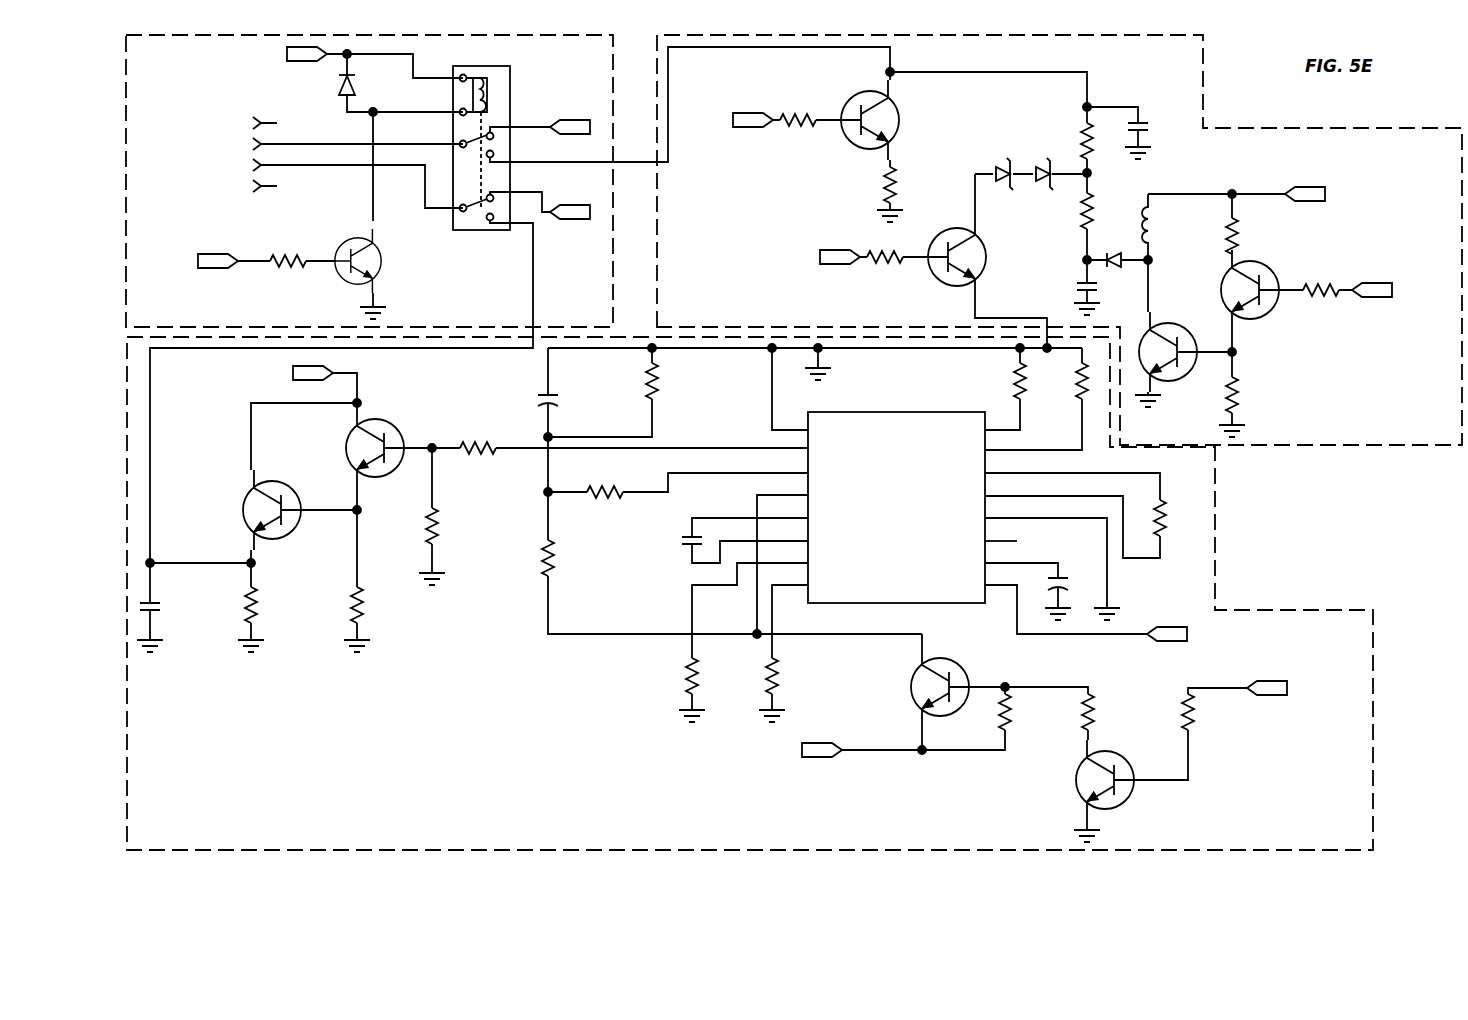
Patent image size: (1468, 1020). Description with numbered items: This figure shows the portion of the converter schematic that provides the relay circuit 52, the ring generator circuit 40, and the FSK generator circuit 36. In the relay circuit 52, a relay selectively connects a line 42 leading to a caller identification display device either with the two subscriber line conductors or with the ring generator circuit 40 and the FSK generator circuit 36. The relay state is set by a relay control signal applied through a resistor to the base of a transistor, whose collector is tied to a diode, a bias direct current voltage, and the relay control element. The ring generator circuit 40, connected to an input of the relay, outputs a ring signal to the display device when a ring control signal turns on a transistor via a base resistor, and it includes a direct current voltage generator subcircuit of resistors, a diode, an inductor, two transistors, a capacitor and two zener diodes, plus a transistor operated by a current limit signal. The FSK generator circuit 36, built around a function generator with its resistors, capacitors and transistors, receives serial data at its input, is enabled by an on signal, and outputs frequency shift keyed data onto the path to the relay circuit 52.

The FSK generator circuit 36 is at (1219, 507).
The ring generator circuit 40 is at (1213, 90).
The line 42 is at (190, 124).
The relay circuit 52 is at (624, 87).